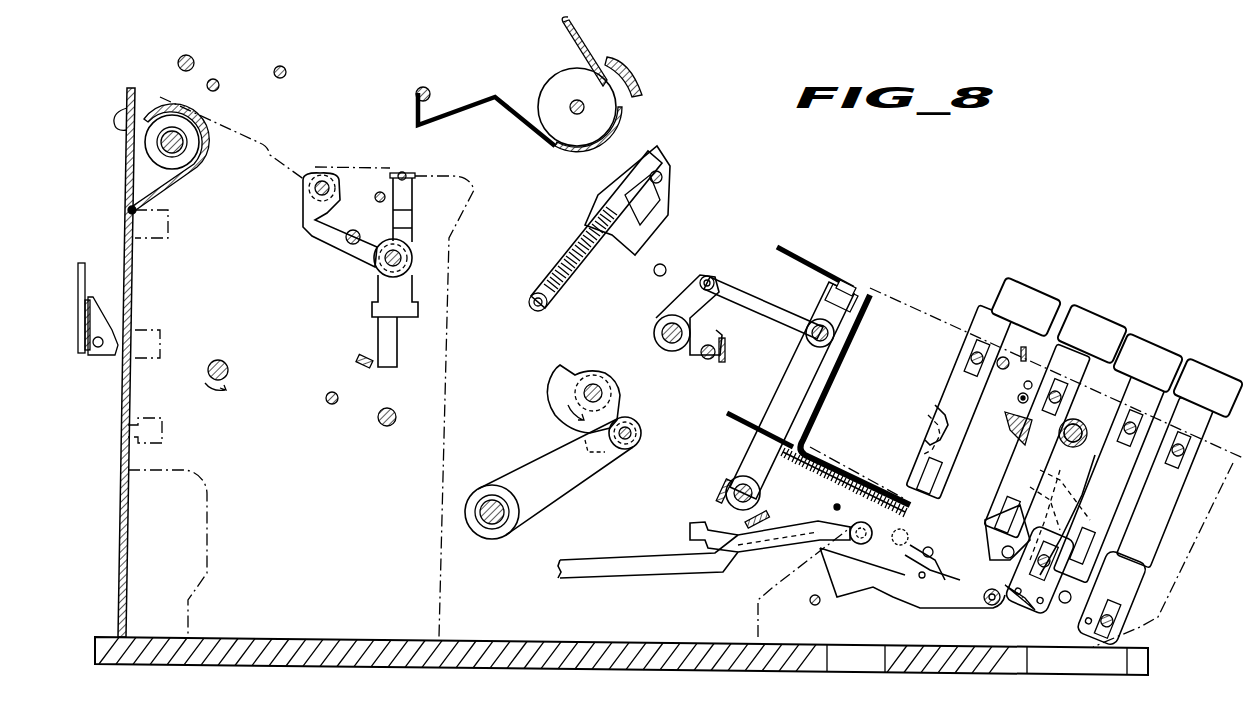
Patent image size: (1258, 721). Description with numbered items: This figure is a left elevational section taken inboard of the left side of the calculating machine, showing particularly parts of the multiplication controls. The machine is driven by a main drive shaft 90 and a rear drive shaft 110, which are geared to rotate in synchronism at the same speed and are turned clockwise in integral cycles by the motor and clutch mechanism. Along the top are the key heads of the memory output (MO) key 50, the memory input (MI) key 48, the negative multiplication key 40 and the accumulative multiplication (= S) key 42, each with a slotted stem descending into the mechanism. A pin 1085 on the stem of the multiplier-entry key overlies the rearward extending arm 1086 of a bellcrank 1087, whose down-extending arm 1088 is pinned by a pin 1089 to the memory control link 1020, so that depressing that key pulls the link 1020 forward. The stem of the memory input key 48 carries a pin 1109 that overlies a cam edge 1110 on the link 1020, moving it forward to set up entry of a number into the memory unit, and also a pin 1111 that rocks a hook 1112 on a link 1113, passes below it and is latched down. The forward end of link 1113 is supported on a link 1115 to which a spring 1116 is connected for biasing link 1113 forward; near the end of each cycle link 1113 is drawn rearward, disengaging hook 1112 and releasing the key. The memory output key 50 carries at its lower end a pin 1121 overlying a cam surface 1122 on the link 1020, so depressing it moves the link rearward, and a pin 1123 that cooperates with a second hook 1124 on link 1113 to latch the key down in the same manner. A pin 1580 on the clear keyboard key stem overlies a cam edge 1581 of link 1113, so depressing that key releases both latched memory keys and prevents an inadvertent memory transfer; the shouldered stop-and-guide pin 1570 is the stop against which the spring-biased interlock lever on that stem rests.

The rear drive shaft 110 is at (225, 369).
The main drive shaft 90 is at (600, 388).
The link 1113 is at (616, 568).
The memory control link 1020 is at (717, 526).
The shouldered stop-and-guide pin 1570 is at (850, 525).
The pin 1121 is at (895, 529).
The pin 1123 is at (931, 414).
The hook 1124 is at (928, 437).
The pin 1085 is at (1020, 400).
The rearward extending arm 1086 is at (1006, 422).
The pin 1111 is at (1040, 470).
The hook 1112 is at (1030, 487).
The bellcrank 1087 is at (1108, 447).
The spring 1116 is at (1085, 490).
The link 1115 is at (1045, 512).
The pin 1109 is at (958, 572).
The cam surface 1122 is at (915, 565).
The pin 1580 is at (926, 558).
The cam edge 1110 is at (940, 568).
The cam edge 1581 is at (924, 580).
The pin 1089 is at (986, 604).
The down-extending arm 1088 is at (1015, 602).
The memory output (MO) key 50 is at (983, 388).
The memory input (MI) key 48 is at (1055, 421).
The negative multiplication (— =) key 40 is at (1118, 458).
The accumulative multiplication (= S) key 42 is at (1160, 503).